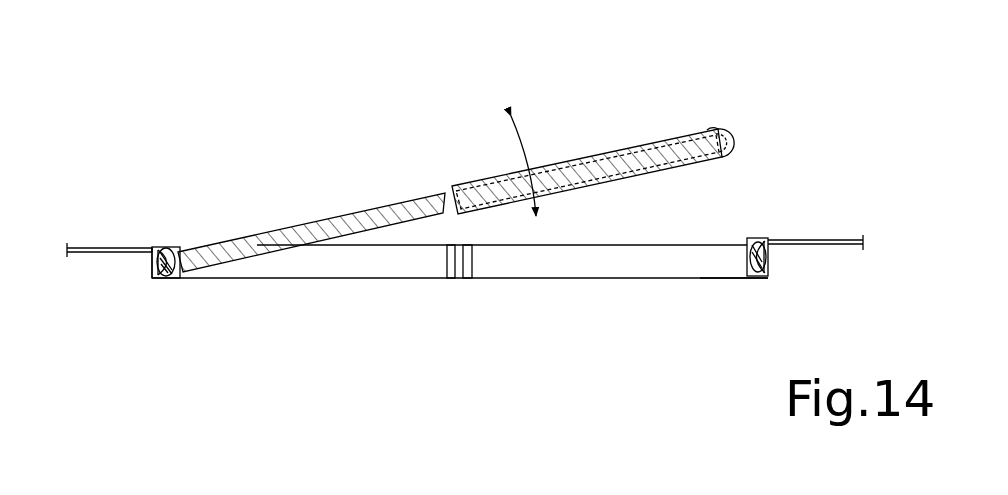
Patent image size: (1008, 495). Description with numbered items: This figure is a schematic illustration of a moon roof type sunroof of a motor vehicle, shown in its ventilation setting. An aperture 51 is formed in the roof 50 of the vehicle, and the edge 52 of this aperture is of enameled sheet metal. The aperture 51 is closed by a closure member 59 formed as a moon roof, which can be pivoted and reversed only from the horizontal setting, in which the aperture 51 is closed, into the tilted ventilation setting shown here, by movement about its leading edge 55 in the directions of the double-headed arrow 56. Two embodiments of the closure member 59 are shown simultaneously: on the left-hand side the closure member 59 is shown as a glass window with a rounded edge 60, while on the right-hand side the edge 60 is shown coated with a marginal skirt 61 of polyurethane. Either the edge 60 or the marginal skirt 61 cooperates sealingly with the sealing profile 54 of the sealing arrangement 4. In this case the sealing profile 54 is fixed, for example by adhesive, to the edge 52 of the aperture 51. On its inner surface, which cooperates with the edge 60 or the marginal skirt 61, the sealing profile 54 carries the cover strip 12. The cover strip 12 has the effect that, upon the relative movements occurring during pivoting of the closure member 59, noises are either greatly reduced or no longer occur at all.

The roof 50 is at (85, 248).
The sealing arrangement 4 is at (158, 235).
The leading edge 55 is at (182, 236).
The rounded edge 60 is at (176, 280).
The closure member 59 is at (478, 214).
The double-headed arrow 56 is at (518, 134).
The marginal skirt 61 is at (712, 130).
The sealing profile 54 is at (772, 237).
The edge 52 is at (767, 260).
The aperture 51 is at (660, 263).
The cover strip 12 is at (760, 257).